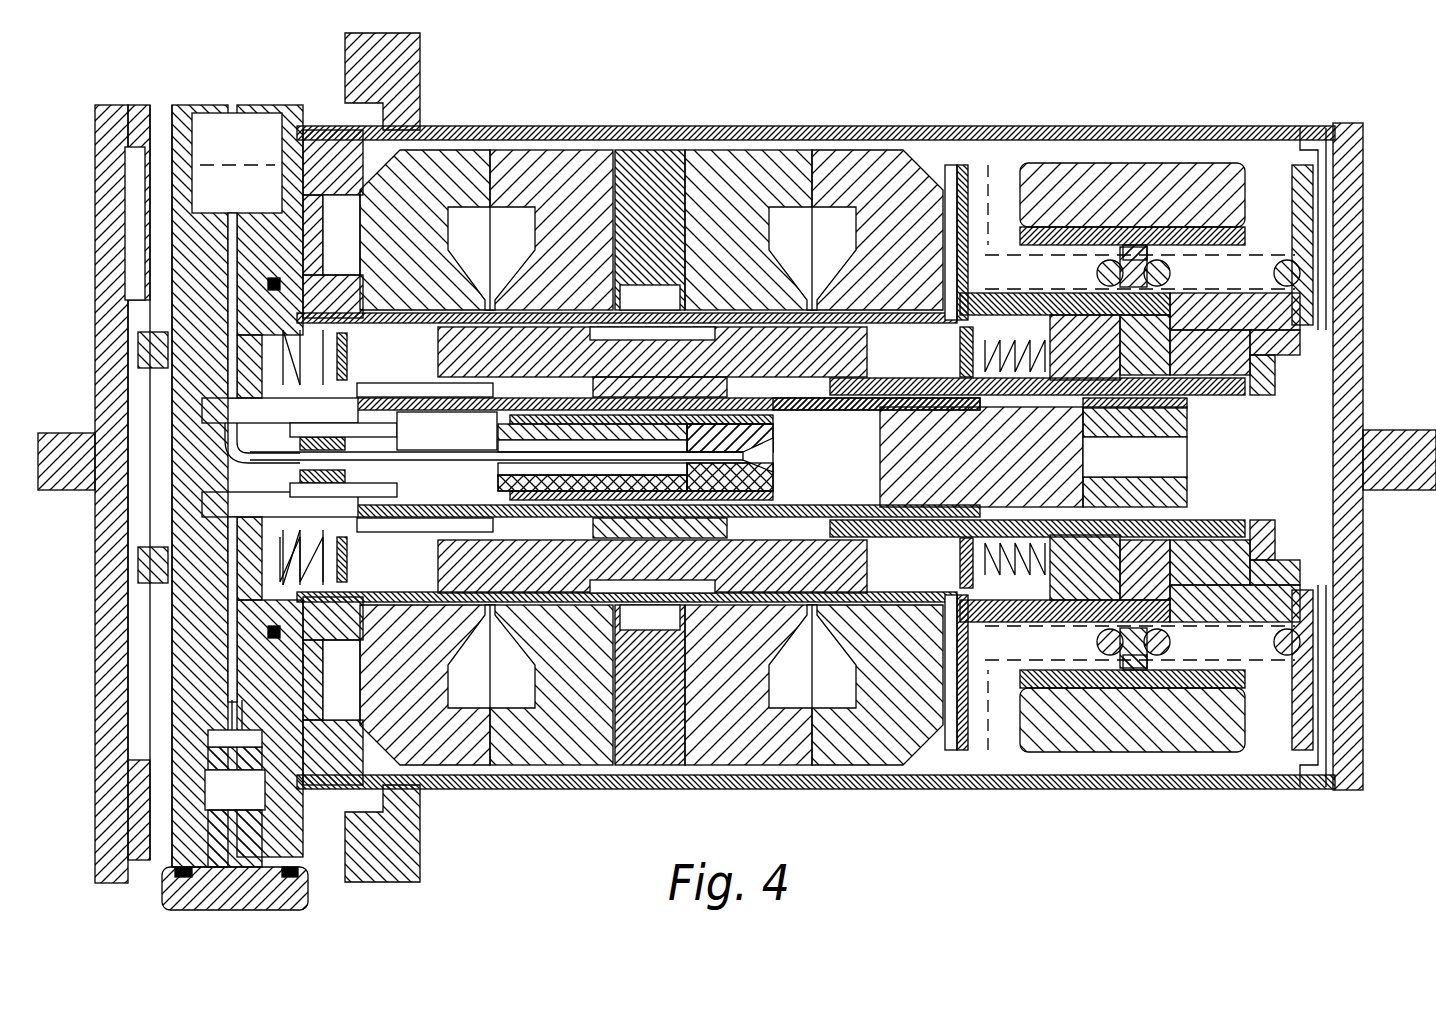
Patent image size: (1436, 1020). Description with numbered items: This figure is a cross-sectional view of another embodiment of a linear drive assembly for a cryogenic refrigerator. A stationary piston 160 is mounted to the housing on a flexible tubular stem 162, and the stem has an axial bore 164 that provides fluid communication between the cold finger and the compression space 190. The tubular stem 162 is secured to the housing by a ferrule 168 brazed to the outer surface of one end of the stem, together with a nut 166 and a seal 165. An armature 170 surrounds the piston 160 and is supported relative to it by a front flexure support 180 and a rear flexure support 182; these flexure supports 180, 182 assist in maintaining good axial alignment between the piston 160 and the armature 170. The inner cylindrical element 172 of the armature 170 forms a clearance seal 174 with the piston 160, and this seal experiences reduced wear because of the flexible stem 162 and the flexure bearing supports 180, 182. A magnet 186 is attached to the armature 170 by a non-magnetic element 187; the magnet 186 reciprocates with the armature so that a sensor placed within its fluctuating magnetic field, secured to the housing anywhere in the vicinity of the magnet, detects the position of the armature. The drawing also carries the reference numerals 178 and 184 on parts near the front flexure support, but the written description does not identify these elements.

The stationary piston 160 is at (777, 482).
The flexible tubular stem 162 is at (485, 475).
The axial bore 164 is at (478, 452).
The seal 165 is at (290, 484).
The nut 166 is at (395, 487).
The ferrule 168 is at (322, 438).
The armature 170 is at (872, 342).
The inner cylindrical element 172 is at (848, 412).
The clearance seal 174 is at (773, 415).
The upper plate 178 is at (348, 348).
The front flexure support 180 is at (373, 538).
The rear flexure support 182 is at (945, 533).
The spring 184 is at (307, 560).
The magnet 186 is at (1192, 408).
The non-magnetic element 187 is at (1187, 402).
The compression space 190 is at (830, 475).